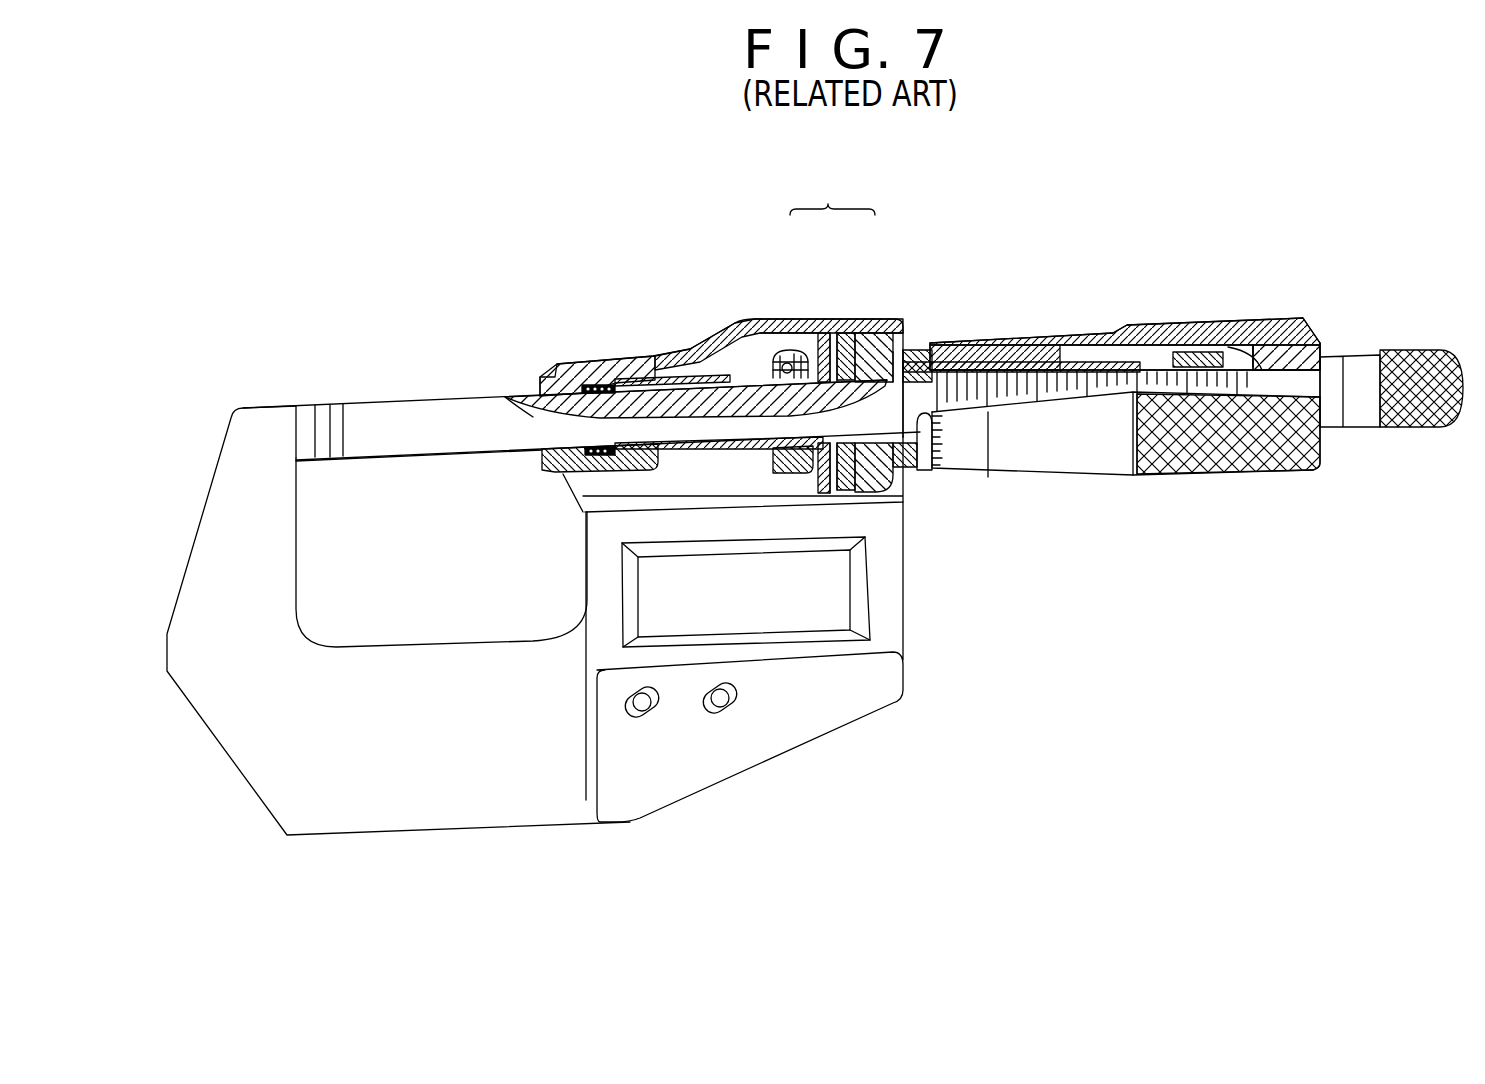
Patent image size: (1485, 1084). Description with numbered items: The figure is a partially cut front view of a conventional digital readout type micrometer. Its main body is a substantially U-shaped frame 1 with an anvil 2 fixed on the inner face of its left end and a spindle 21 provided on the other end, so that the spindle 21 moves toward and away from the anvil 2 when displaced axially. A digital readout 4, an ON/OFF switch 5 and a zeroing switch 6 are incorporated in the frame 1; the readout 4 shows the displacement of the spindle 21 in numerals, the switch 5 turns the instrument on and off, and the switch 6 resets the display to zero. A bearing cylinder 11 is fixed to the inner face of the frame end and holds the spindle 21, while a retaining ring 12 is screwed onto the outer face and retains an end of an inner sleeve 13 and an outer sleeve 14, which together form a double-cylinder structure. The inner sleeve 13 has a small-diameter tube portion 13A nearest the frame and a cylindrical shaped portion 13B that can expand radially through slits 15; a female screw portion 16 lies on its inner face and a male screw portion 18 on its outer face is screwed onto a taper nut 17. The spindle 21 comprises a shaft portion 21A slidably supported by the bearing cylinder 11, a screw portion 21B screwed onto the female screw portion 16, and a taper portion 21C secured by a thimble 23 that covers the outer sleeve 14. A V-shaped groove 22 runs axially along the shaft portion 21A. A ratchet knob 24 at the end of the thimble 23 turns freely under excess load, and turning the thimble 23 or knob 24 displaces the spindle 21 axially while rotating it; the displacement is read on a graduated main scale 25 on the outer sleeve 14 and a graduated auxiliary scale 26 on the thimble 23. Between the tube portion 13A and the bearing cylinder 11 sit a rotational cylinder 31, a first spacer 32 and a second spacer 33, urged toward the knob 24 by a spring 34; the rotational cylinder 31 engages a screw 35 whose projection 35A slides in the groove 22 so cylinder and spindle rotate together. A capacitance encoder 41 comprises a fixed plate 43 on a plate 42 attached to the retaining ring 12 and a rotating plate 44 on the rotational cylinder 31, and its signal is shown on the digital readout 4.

The U-shaped frame 1 is at (434, 822).
The anvil 2 is at (300, 408).
The digital readout 4 is at (808, 622).
The ON/OFF switch 5 is at (640, 720).
The zeroing switch 6 is at (718, 718).
The bearing cylinder 11 is at (545, 368).
The retaining ring 12 is at (895, 322).
The inner sleeve 13 is at (930, 330).
The small-diameter tube portion 13A is at (855, 455).
The cylindrical shaped portion 13B is at (1212, 317).
The outer sleeve 14 is at (1005, 332).
The slits 15 is at (1122, 330).
The female screw portion 16 is at (1175, 328).
The taper nut 17 is at (1212, 343).
The male screw portion 18 is at (1262, 330).
The spindle 21 is at (405, 408).
The shaft portion 21A is at (442, 447).
The screw portion 21B is at (1027, 410).
The taper portion 21C is at (1320, 440).
The V-shaped groove 22 is at (700, 350).
The thimble 23 is at (1205, 467).
The ratchet knob 24 is at (1427, 418).
The graduated main scale 25 is at (928, 470).
The graduated auxiliary scale 26 is at (948, 440).
The rotational cylinder 31 is at (775, 352).
The first spacer 32 is at (737, 360).
The second spacer 33 is at (635, 356).
The spring 34 is at (583, 375).
The screw 35 is at (790, 355).
The projection 35A is at (765, 412).
The capacitance encoder 41 is at (832, 335).
The plate 42 is at (850, 322).
The fixed plate 43 is at (835, 322).
The rotating plate 44 is at (825, 322).